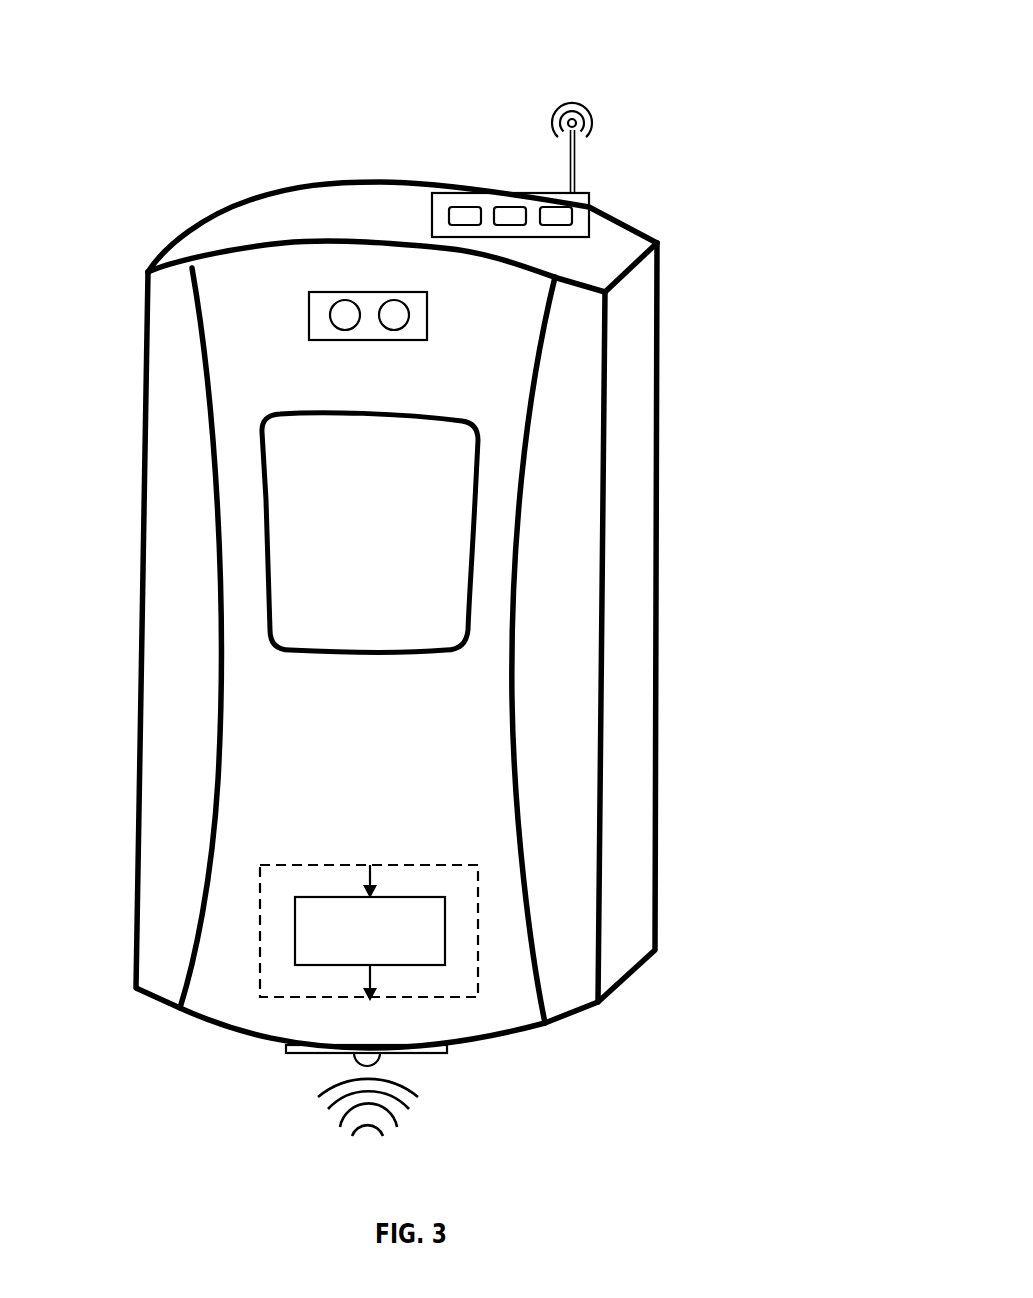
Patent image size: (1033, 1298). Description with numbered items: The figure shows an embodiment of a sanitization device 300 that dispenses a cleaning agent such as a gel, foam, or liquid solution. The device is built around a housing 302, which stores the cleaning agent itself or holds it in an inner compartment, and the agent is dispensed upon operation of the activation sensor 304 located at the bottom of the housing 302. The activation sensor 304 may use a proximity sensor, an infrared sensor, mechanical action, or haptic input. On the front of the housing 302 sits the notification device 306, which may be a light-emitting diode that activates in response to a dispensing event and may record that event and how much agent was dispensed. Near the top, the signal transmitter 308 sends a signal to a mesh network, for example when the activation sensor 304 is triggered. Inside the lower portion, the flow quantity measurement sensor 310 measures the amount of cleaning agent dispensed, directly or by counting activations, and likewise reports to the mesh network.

The sanitization device 300 is at (760, 54).
The housing 302 is at (148, 266).
The activation sensor 304 is at (480, 1179).
The notification device 306 is at (308, 303).
The signal transmitter 308 is at (593, 123).
The flow quantity measurement sensor 310 is at (355, 957).